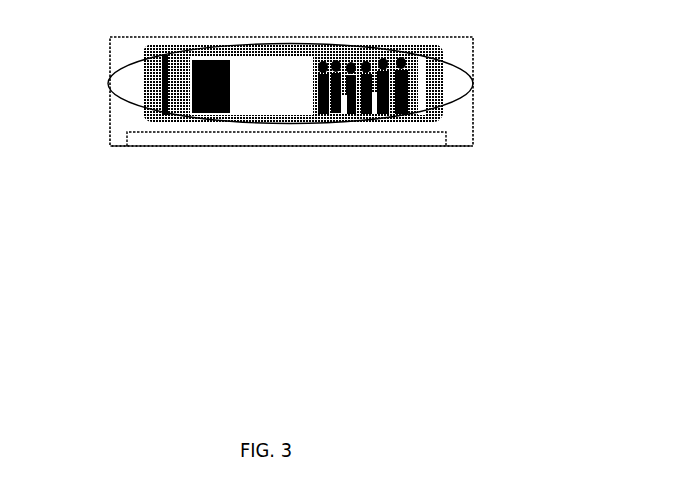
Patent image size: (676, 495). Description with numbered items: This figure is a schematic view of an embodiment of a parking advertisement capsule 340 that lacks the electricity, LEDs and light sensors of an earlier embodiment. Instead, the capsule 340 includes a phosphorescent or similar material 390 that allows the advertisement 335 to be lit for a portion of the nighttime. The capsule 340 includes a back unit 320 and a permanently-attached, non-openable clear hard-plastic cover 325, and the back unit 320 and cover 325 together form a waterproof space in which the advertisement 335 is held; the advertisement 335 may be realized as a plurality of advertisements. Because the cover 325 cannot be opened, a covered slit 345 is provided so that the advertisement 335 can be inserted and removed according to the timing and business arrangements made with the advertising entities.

The parking advertisement capsule 340 is at (99, 179).
The phosphorescent or similar material 390 is at (284, 147).
The back unit 320 is at (109, 137).
The advertisement 335 is at (147, 47).
The covered slit 345 is at (161, 84).
The clear hard-plastic cover 325 is at (464, 98).